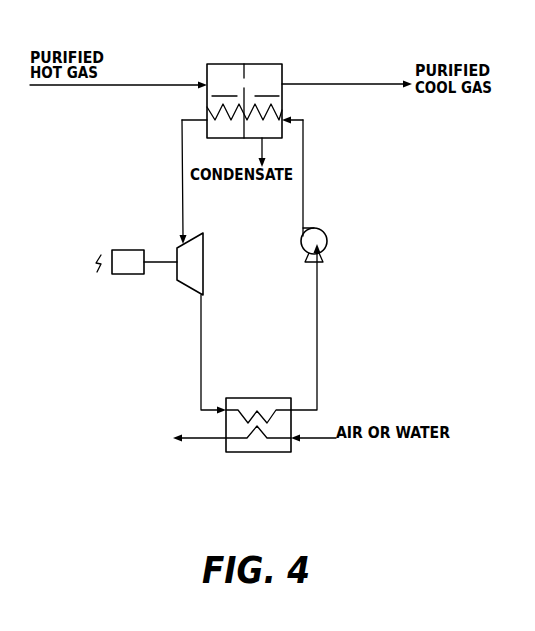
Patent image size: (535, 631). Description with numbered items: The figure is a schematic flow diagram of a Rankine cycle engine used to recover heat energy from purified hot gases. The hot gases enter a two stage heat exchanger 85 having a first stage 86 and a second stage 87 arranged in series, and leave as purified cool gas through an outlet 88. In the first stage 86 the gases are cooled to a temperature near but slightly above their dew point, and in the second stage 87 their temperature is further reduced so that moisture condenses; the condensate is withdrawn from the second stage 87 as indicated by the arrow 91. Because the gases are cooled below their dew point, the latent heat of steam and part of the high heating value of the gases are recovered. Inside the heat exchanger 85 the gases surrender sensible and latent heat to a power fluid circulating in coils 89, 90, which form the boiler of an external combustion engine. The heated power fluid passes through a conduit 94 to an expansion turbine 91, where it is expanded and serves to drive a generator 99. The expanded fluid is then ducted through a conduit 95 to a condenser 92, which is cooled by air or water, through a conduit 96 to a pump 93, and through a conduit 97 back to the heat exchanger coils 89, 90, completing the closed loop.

The heat exchanger 85 is at (284, 69).
The first stage 86 is at (224, 84).
The second stage 87 is at (267, 84).
The purified cool gas outlet line 88 is at (343, 84).
The heat exchanger coil 89 is at (280, 110).
The heat exchanger coil 90 is at (209, 108).
The expansion turbine 91 is at (262, 150).
The condenser 92 is at (226, 424).
The pump 93 is at (320, 242).
The conduit 94 is at (192, 221).
The conduit 95 is at (201, 343).
The conduit 96 is at (330, 350).
The conduit 97 is at (321, 174).
The generator 99 is at (138, 269).